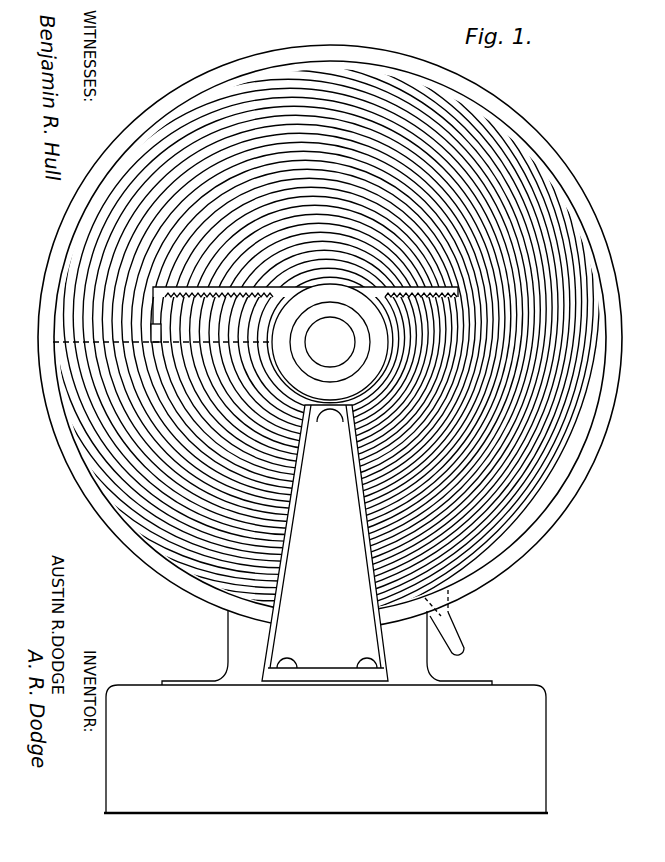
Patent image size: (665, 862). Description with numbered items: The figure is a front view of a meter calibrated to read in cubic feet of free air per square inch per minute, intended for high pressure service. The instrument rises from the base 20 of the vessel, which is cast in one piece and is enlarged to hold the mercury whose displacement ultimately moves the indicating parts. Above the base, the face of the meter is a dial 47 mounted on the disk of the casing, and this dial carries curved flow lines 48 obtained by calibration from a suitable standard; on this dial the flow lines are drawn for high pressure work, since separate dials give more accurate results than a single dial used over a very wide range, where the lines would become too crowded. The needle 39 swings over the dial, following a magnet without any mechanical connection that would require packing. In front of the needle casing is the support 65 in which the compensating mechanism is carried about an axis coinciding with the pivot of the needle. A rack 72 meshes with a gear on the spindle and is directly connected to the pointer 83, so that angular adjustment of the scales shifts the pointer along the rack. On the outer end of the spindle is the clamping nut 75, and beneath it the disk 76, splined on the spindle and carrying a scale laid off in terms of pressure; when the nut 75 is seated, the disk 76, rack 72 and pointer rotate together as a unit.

The base of the vessel 20 is at (326, 749).
The needle 39 is at (53, 343).
The dial 47 is at (568, 240).
The flow lines 48 is at (108, 486).
The support 65 is at (325, 543).
The rack 72 is at (250, 285).
The clamping nut 75 is at (330, 342).
The disk 76 is at (330, 342).
The pointer 83 is at (151, 330).